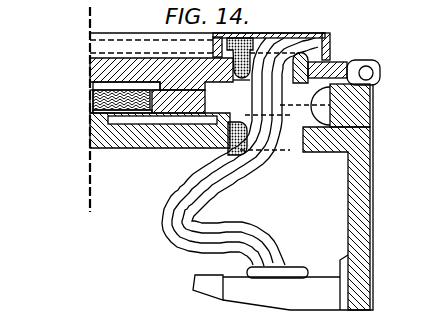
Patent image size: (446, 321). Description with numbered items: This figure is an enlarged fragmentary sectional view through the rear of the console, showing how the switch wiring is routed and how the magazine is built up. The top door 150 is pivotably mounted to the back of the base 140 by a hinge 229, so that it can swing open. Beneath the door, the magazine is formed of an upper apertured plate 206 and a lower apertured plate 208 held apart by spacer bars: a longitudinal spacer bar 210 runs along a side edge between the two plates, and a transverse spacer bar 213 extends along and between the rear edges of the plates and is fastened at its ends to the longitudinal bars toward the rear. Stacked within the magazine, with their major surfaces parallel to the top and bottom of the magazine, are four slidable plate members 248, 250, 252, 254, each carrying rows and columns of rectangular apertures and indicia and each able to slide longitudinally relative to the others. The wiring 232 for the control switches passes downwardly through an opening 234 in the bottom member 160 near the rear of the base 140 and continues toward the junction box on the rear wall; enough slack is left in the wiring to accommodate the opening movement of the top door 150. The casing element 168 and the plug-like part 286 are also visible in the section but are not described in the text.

The base 140 is at (371, 210).
The top door 150 is at (92, 62).
The bottom member 160 is at (105, 139).
The housing cover 168 is at (326, 34).
The upper apertured plate 206 is at (160, 82).
The lower apertured plate 208 is at (164, 148).
The longitudinal spacer bar 210 is at (330, 107).
The transverse spacer bar 213 is at (204, 100).
The hinge 229 is at (367, 62).
The wiring 232 is at (170, 208).
The opening 234 is at (283, 153).
The slidable plate member 248 is at (90, 121).
The slidable plate member 250 is at (92, 111).
The slidable plate member 252 is at (93, 100).
The slidable plate member 254 is at (95, 86).
The connector plug 286 is at (196, 278).